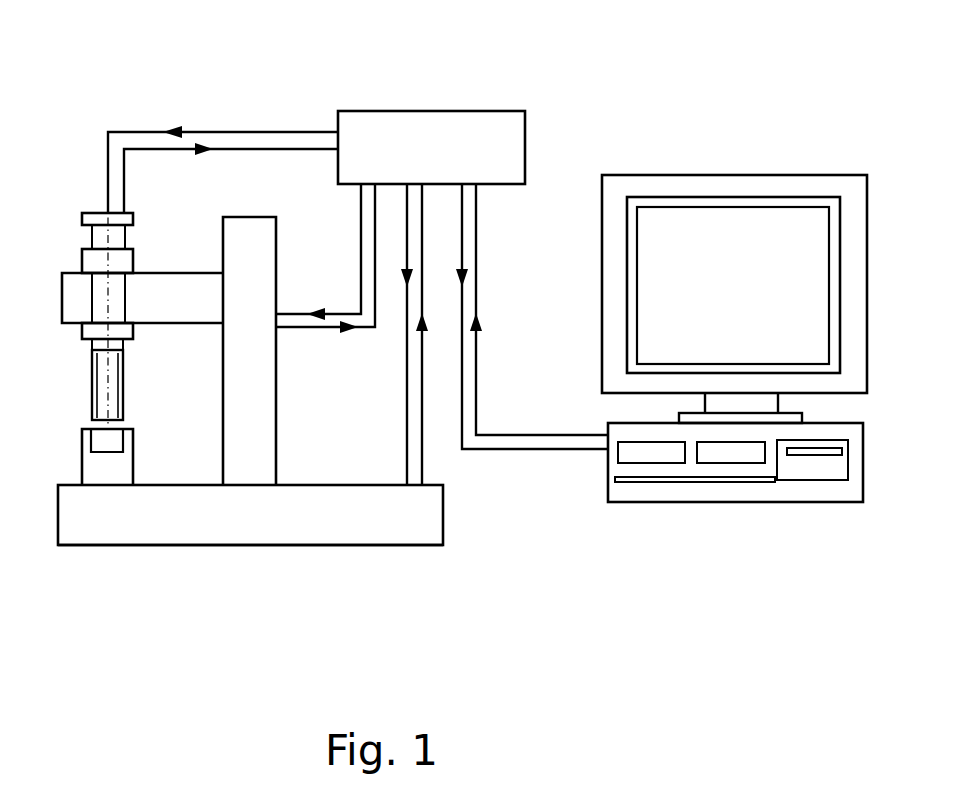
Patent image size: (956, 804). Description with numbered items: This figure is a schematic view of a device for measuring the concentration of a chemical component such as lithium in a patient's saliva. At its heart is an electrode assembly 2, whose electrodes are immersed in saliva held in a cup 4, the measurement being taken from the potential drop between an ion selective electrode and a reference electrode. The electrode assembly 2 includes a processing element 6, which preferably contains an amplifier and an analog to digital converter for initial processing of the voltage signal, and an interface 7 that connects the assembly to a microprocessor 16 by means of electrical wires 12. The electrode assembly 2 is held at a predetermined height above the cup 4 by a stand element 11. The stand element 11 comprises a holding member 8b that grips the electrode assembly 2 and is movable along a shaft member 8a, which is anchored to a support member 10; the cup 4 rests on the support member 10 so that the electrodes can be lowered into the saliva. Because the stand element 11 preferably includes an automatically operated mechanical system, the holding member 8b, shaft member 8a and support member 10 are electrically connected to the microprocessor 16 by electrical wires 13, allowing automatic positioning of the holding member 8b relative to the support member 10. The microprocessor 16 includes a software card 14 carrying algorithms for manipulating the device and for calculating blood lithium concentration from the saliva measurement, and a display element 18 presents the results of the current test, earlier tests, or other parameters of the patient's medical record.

The electrode assembly 2 is at (92, 345).
The cup 4 is at (80, 465).
The processing element 6 is at (85, 262).
The interface 7 is at (90, 213).
The shaft member 8a is at (265, 408).
The holding member 8b is at (155, 310).
The support member 10 is at (197, 540).
The stand element 11 is at (116, 560).
The electrical wires 12 is at (223, 130).
The electrical wires 13 is at (405, 360).
The software card 14 is at (397, 135).
The microprocessor 16 is at (692, 495).
The display element 18 is at (705, 190).